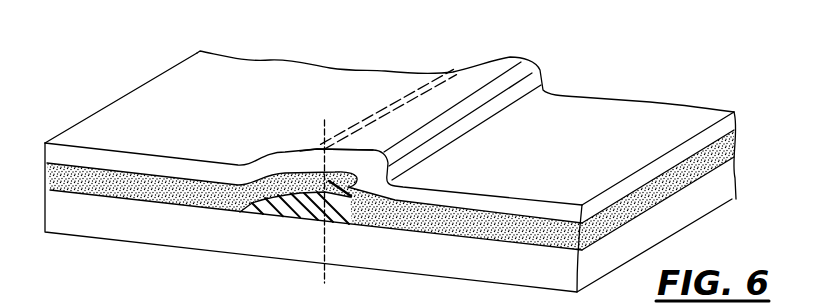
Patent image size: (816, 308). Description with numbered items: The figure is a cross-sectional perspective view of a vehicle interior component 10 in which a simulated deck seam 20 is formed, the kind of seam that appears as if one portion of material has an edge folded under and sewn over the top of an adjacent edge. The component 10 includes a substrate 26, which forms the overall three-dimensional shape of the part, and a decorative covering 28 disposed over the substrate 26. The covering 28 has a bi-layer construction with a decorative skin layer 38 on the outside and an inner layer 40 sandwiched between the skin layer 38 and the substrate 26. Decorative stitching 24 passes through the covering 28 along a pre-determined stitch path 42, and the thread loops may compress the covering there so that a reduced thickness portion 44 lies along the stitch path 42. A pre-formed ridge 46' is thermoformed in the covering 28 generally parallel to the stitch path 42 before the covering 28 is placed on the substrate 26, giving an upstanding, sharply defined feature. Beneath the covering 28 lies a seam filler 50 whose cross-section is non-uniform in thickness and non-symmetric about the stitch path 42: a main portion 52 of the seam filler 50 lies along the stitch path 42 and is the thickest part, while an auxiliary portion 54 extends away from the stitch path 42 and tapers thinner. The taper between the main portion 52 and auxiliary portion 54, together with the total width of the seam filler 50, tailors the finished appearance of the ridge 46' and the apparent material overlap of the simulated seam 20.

The vehicle interior component 10 is at (84, 77).
The simulated deck seam 20 is at (498, 53).
The decorative stitching 24 is at (442, 74).
The substrate 26 is at (60, 217).
The decorative covering 28 is at (100, 131).
The decorative skin layer 38 is at (729, 127).
The inner layer 40 is at (737, 150).
The stitch path 42 is at (325, 138).
The reduced thickness portion 44 is at (349, 186).
The pre-formed ridge 46' is at (389, 93).
The seam filler 50 is at (285, 210).
The main portion 52 is at (327, 222).
The auxiliary portion 54 is at (262, 202).